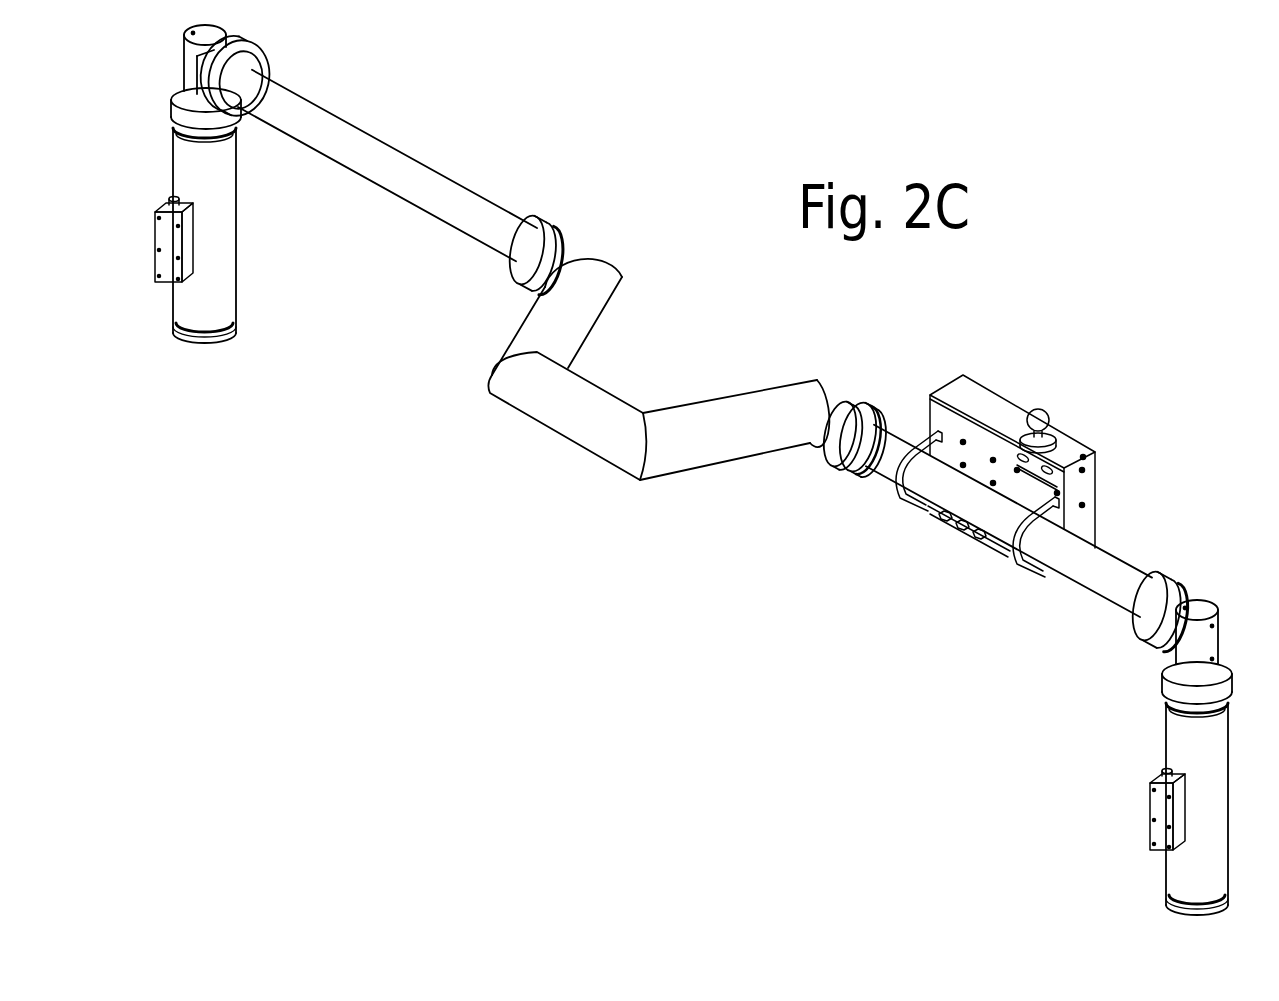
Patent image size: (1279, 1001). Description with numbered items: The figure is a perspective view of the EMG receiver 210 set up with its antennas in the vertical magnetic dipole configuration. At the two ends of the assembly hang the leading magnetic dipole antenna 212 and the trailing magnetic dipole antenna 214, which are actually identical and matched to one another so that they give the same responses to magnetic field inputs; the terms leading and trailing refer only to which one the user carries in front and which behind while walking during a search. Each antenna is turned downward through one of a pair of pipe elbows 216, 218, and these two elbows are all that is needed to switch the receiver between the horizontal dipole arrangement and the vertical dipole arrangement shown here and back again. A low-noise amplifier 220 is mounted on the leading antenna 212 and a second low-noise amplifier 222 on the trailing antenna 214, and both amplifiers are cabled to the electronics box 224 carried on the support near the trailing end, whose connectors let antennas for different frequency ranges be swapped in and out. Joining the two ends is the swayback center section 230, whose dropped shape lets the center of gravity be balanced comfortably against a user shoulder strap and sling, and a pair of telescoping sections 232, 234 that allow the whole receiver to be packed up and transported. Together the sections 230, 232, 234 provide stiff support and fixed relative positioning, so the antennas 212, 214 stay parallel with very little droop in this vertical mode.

The horizontal magnetic dipole antenna type EMG receiver 210 is at (572, 136).
The leading magnetic dipole antenna 212 is at (230, 257).
The trailing magnetic dipole antenna 214 is at (1178, 737).
The pipe elbow 216 is at (183, 56).
The pipe elbow 218 is at (1208, 608).
The low-noise amplifier 220 is at (157, 222).
The low-noise amplifier 222 is at (1157, 800).
The electronics box 224 is at (1000, 408).
The swayback center section 230 is at (560, 427).
The telescoping section 232 is at (340, 157).
The telescoping section 234 is at (1080, 578).